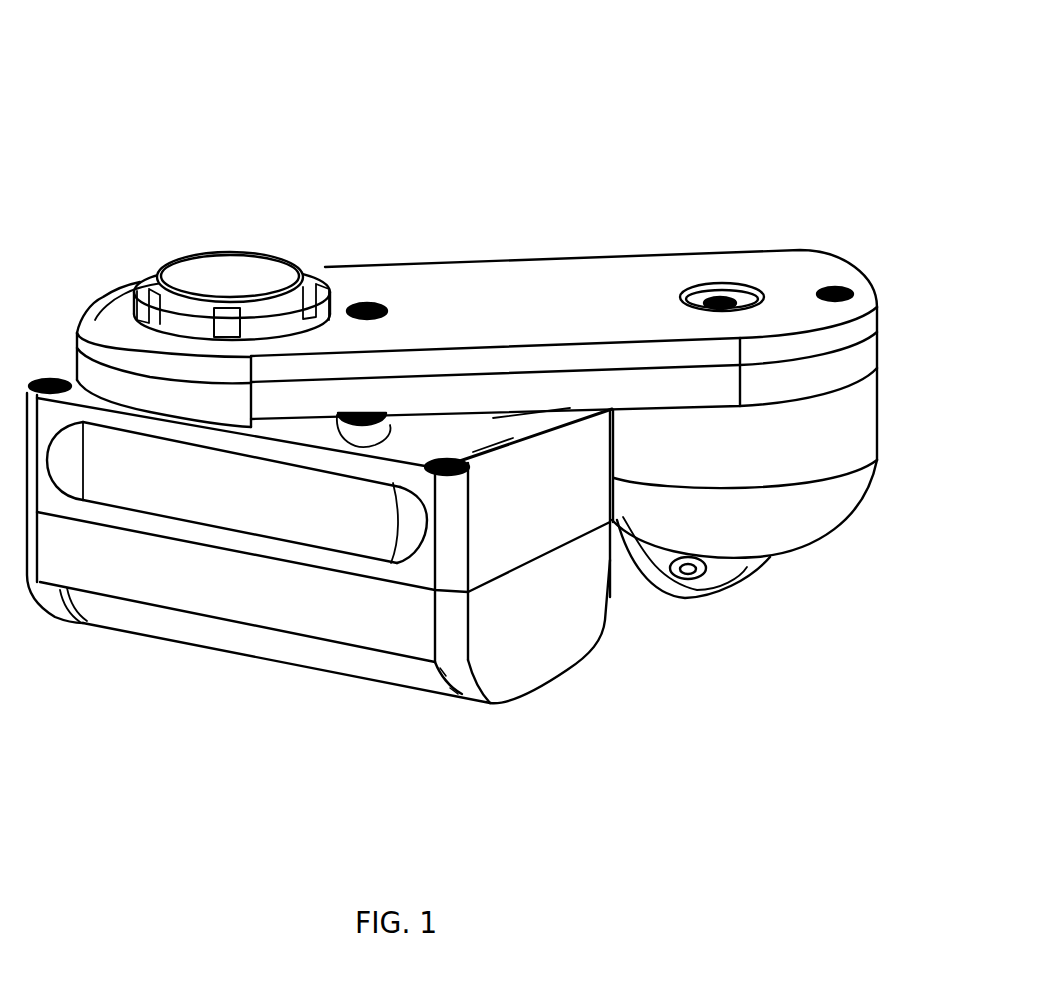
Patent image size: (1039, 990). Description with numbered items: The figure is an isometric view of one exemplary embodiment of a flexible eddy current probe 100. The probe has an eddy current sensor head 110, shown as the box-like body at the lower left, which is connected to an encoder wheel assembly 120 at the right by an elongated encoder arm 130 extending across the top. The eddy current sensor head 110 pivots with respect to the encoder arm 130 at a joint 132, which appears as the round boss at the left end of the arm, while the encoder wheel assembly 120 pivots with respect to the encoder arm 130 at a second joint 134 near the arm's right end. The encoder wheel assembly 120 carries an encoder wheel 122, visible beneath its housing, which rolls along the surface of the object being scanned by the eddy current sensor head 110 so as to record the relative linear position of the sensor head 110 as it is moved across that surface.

The flexible eddy current probe 100 is at (95, 58).
The eddy current sensor head 110 is at (563, 673).
The encoder wheel assembly 120 is at (777, 589).
The encoder wheel 122 is at (630, 593).
The encoder arm 130 is at (470, 294).
The joint 132 is at (217, 252).
The joint 134 is at (710, 300).